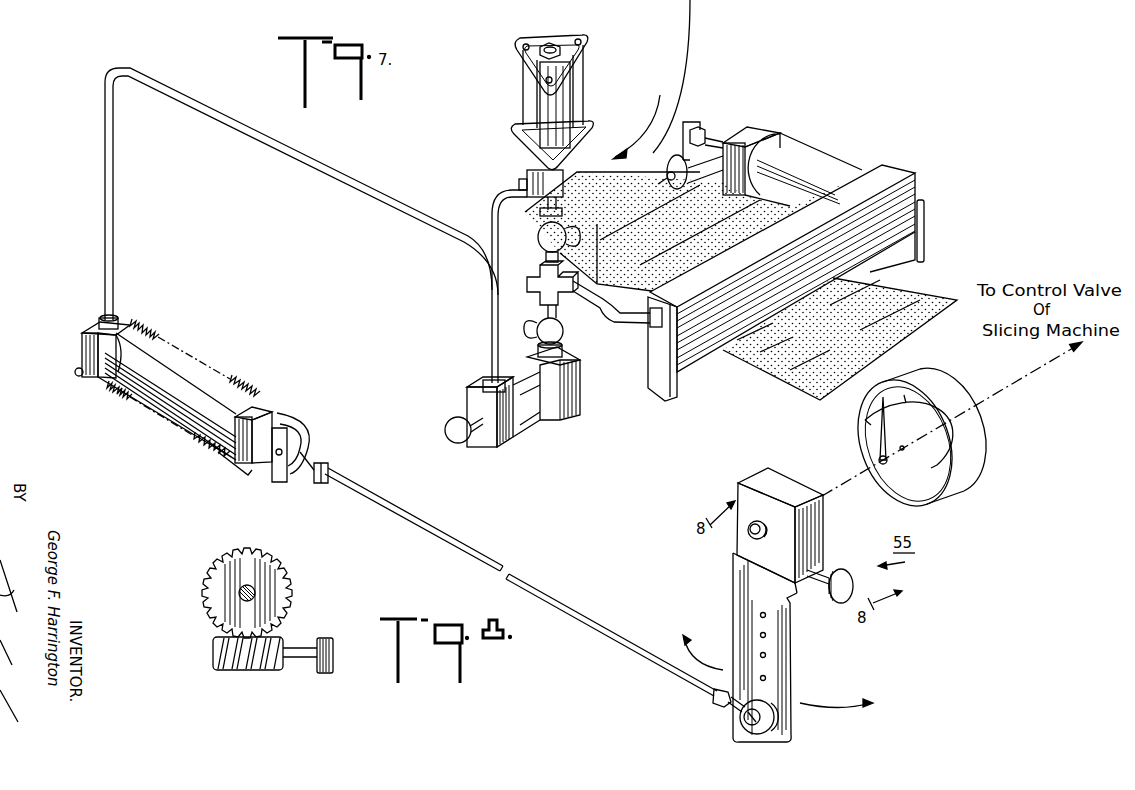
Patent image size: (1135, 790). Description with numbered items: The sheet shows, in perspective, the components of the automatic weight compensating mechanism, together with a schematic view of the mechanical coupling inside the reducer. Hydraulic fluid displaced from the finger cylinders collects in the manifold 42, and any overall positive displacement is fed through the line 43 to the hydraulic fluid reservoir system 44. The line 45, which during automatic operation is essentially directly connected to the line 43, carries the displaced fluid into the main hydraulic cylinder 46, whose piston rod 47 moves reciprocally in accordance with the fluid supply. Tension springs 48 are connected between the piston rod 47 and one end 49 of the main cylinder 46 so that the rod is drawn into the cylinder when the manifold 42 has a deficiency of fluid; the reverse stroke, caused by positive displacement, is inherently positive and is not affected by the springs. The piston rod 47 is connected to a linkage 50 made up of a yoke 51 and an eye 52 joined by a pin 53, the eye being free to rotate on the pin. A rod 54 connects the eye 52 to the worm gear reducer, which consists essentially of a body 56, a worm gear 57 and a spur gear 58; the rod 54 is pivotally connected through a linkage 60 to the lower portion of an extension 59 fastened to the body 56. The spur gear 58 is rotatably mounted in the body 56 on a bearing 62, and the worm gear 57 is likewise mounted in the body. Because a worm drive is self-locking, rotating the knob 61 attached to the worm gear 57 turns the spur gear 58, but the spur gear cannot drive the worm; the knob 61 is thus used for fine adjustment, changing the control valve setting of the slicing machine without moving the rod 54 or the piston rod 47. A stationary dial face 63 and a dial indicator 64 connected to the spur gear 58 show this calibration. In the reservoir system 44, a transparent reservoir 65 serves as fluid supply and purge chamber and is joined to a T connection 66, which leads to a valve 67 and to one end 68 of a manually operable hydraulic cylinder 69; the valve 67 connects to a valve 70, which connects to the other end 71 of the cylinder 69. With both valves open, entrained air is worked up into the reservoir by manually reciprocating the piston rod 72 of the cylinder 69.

In FIG. 7, the manifold 42 is at (890, 170).
In FIG. 7, the line 43 is at (637, 325).
In FIG. 7, the hydraulic fluid reservoir system 44 is at (567, 207).
In FIG. 7, the line 45 is at (390, 203).
In FIG. 7, the main hydraulic cylinder 46 is at (194, 409).
In FIG. 7, the piston rod 47 is at (275, 415).
In FIG. 7, the tension springs 48 is at (160, 333).
In FIG. 7, the end of main cylinder 49 is at (84, 345).
In FIG. 7, the linkage 50 is at (508, 571).
In FIG. 7, the yoke 51 is at (310, 436).
In FIG. 7, the eye 52 is at (320, 484).
In FIG. 7, the pin 53 is at (285, 482).
In FIG. 7, the rod 54 is at (497, 566).
In FIG. 7, the body 56 is at (778, 483).
In FIG. 8, the worm gear 57 is at (257, 671).
In FIG. 8, the spur gear 58 is at (210, 591).
In FIG. 7, the extension 59 is at (790, 650).
In FIG. 7, the linkage 60 is at (738, 727).
In FIG. 7, the knob 61 is at (848, 584).
In FIG. 8, the knob 61 is at (325, 637).
In FIG. 7, the bearing 62 is at (750, 533).
In FIG. 7, the dial face 63 is at (931, 443).
In FIG. 7, the dial indicator 64 is at (886, 466).
In FIG. 7, the transparent reservoir 65 is at (530, 99).
In FIG. 7, the T connection 66 is at (527, 177).
In FIG. 7, the valve 67 is at (540, 242).
In FIG. 7, the end of hydraulic cylinder 68 is at (492, 333).
In FIG. 7, the manually operable hydraulic cylinder 69 is at (532, 410).
In FIG. 7, the valve 70 is at (564, 331).
In FIG. 7, the other end of hydraulic cylinder 71 is at (565, 354).
In FIG. 7, the piston rod 72 is at (467, 440).